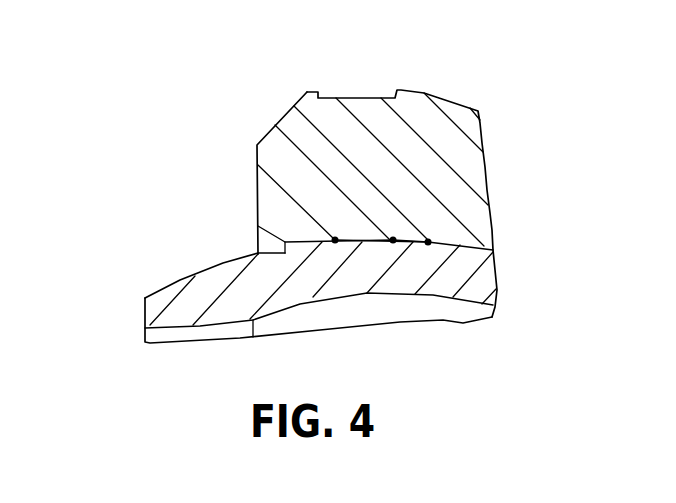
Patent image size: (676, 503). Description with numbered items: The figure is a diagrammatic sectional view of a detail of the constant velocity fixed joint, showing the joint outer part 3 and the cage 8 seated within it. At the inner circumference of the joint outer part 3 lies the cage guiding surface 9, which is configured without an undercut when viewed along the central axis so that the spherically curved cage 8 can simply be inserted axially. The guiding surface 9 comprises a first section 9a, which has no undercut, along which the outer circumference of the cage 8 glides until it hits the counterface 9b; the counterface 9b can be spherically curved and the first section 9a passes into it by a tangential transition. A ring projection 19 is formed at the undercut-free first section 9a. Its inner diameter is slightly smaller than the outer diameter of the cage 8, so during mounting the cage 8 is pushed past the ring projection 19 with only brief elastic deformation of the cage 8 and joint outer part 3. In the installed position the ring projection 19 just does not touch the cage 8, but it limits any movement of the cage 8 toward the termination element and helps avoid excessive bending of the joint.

The joint outer part 3 is at (472, 206).
The cage 8 is at (220, 278).
The cage guiding surface 9 is at (393, 240).
The first section 9a is at (335, 240).
The counterface 9b is at (428, 242).
The ring projection 19 is at (335, 240).